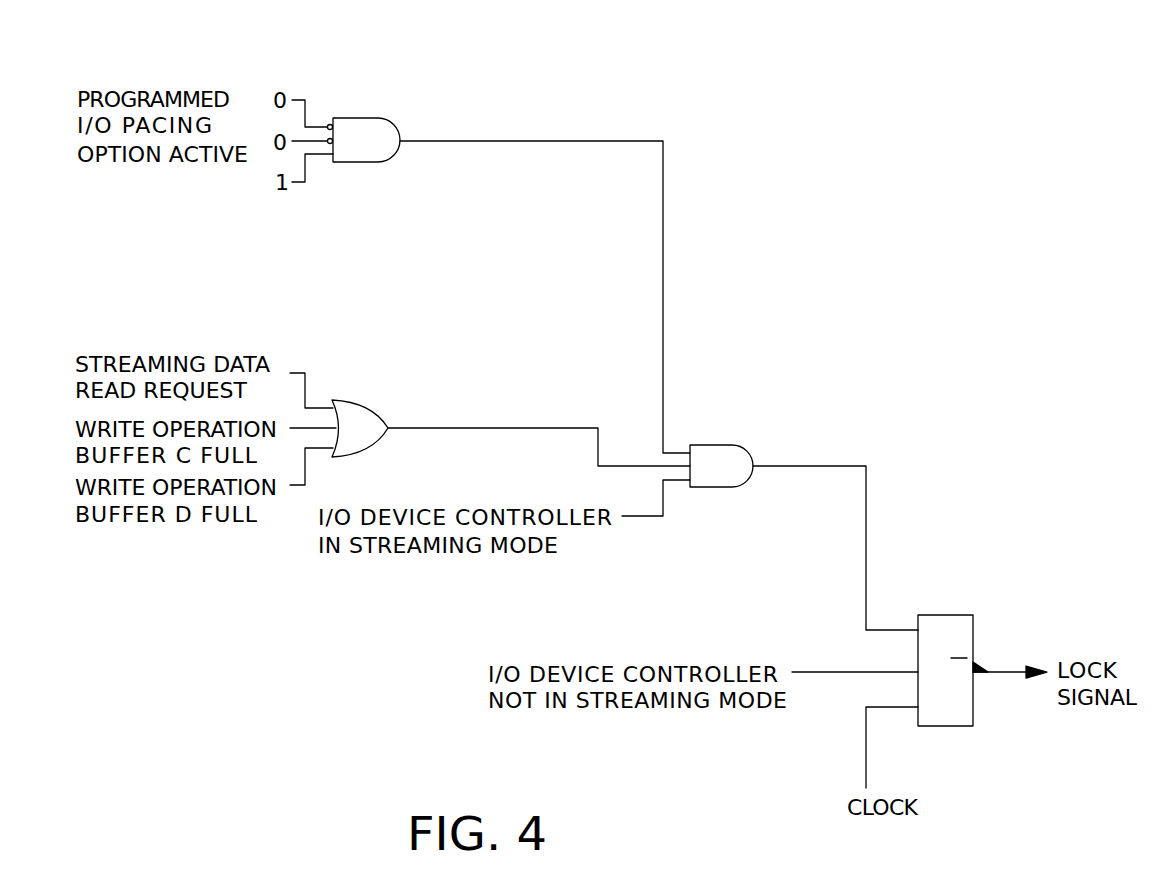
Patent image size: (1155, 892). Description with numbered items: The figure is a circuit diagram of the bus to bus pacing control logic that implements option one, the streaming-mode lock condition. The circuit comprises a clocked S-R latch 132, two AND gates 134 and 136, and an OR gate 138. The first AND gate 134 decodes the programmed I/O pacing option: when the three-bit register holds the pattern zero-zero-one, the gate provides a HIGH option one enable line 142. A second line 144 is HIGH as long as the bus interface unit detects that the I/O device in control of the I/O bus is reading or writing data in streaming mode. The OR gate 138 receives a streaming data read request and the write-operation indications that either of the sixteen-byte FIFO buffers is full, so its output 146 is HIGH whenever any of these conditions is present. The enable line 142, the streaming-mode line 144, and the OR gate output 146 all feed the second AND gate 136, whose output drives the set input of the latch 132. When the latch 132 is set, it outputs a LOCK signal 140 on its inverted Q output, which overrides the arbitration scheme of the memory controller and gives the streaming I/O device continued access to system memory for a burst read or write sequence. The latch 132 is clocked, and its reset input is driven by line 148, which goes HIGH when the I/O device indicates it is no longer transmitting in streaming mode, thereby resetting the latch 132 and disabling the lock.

The clocked S-R latch 132 is at (945, 615).
The AND gate 134 is at (372, 118).
The AND gate 136 is at (723, 445).
The OR gate 138 is at (355, 400).
The LOCK signal 140 is at (1012, 673).
The option 1 enable line 142 is at (525, 141).
The line 144 is at (643, 518).
The output of OR gate 146 is at (523, 428).
The line 148 is at (832, 673).